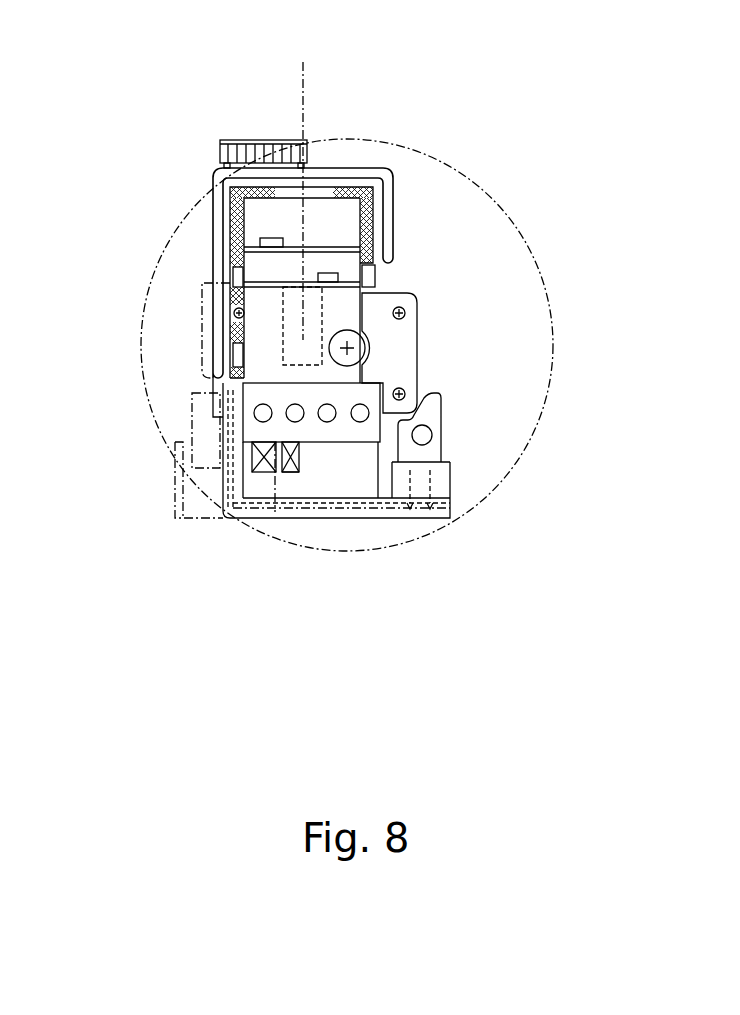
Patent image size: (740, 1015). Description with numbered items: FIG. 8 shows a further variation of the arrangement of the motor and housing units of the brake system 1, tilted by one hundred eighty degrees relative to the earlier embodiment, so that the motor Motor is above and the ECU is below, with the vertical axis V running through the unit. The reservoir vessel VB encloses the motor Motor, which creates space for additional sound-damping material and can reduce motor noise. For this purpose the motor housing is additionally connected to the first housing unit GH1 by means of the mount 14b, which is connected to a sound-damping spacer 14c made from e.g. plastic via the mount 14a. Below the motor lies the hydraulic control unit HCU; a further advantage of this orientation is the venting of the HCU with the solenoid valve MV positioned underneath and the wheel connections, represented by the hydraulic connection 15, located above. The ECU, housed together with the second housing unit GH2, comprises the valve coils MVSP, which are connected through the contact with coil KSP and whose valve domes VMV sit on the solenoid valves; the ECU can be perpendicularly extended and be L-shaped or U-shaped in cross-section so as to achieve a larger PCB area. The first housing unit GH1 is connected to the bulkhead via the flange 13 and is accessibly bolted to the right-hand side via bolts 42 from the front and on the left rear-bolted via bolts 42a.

The housing / mounting bracket 1 is at (443, 442).
The flange 13 is at (377, 267).
The motor mount 14a is at (402, 312).
The motor mount 14b is at (273, 240).
The spacer 14c is at (237, 272).
The pump element bore 15 is at (366, 422).
The front-bolted fastening 42 is at (417, 340).
The rear-bolted fastening 42a is at (239, 313).
The vertical axis V is at (315, 186).
The reservoir vessel VB is at (212, 228).
The motor Motor is at (343, 228).
The first housing unit GH1 is at (200, 333).
The second housing unit GH2 is at (140, 397).
The hydraulic control unit HCU is at (255, 420).
The electronic control unit ECU is at (173, 480).
The solenoid valve MV is at (278, 470).
The solenoid valve dome VMV is at (276, 453).
The solenoid valve coil MVSP is at (298, 458).
The contact with coil KSP is at (298, 476).